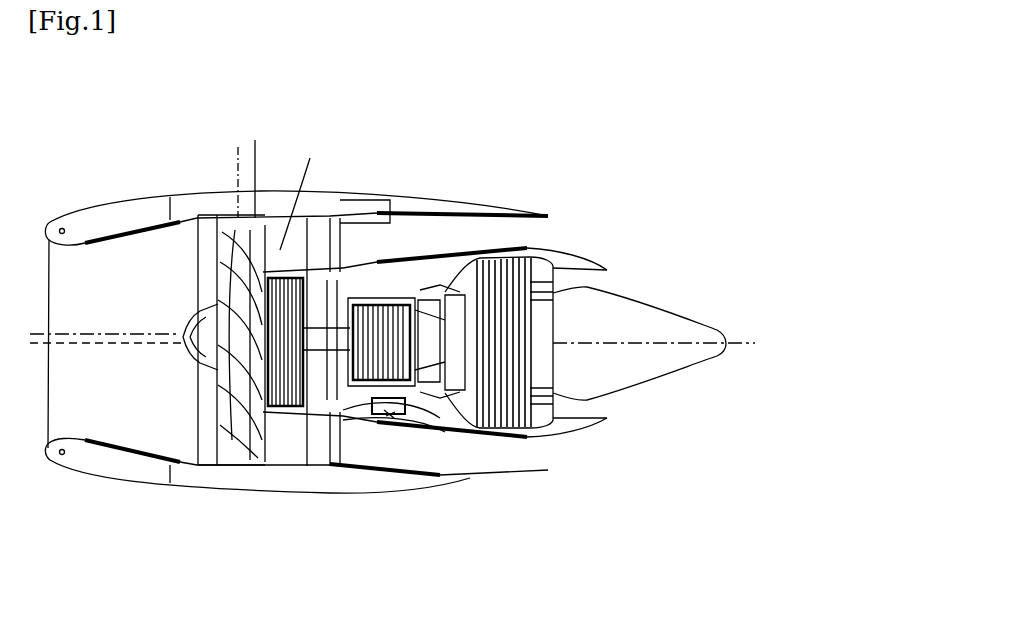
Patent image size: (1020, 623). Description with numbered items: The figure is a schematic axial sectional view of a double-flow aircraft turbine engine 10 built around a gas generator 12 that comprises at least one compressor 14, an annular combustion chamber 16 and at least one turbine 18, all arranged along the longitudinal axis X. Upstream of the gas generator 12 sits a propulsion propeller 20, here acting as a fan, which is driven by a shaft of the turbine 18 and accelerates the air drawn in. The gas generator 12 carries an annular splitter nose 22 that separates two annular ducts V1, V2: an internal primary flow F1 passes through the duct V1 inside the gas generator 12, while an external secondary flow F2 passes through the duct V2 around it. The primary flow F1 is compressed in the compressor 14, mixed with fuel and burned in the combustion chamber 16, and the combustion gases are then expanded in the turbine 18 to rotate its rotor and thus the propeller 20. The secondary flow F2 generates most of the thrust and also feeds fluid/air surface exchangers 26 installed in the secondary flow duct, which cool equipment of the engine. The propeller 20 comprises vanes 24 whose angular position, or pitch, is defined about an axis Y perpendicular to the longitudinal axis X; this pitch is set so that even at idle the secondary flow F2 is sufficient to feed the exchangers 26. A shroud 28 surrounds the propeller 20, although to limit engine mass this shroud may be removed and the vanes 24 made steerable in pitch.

The aircraft turbine engine 10 is at (594, 165).
The gas generator 12 is at (564, 452).
The compressor 14 is at (366, 266).
The annular combustion chamber 16 is at (436, 288).
The turbine 18 is at (495, 262).
The propulsion propeller 20 is at (243, 466).
The annular splitter nose 22 is at (263, 470).
The vanes 24 is at (232, 282).
The fluid/air surface exchangers 26 is at (334, 210).
The shroud 28 is at (205, 492).
The internal primary flow F1 is at (255, 167).
The external secondary flow F2 is at (276, 250).
The annular duct of the primary flow V1 is at (305, 448).
The annular duct of the secondary flow V2 is at (318, 455).
The longitudinal axis X is at (720, 328).
The pitch axis Y is at (237, 158).